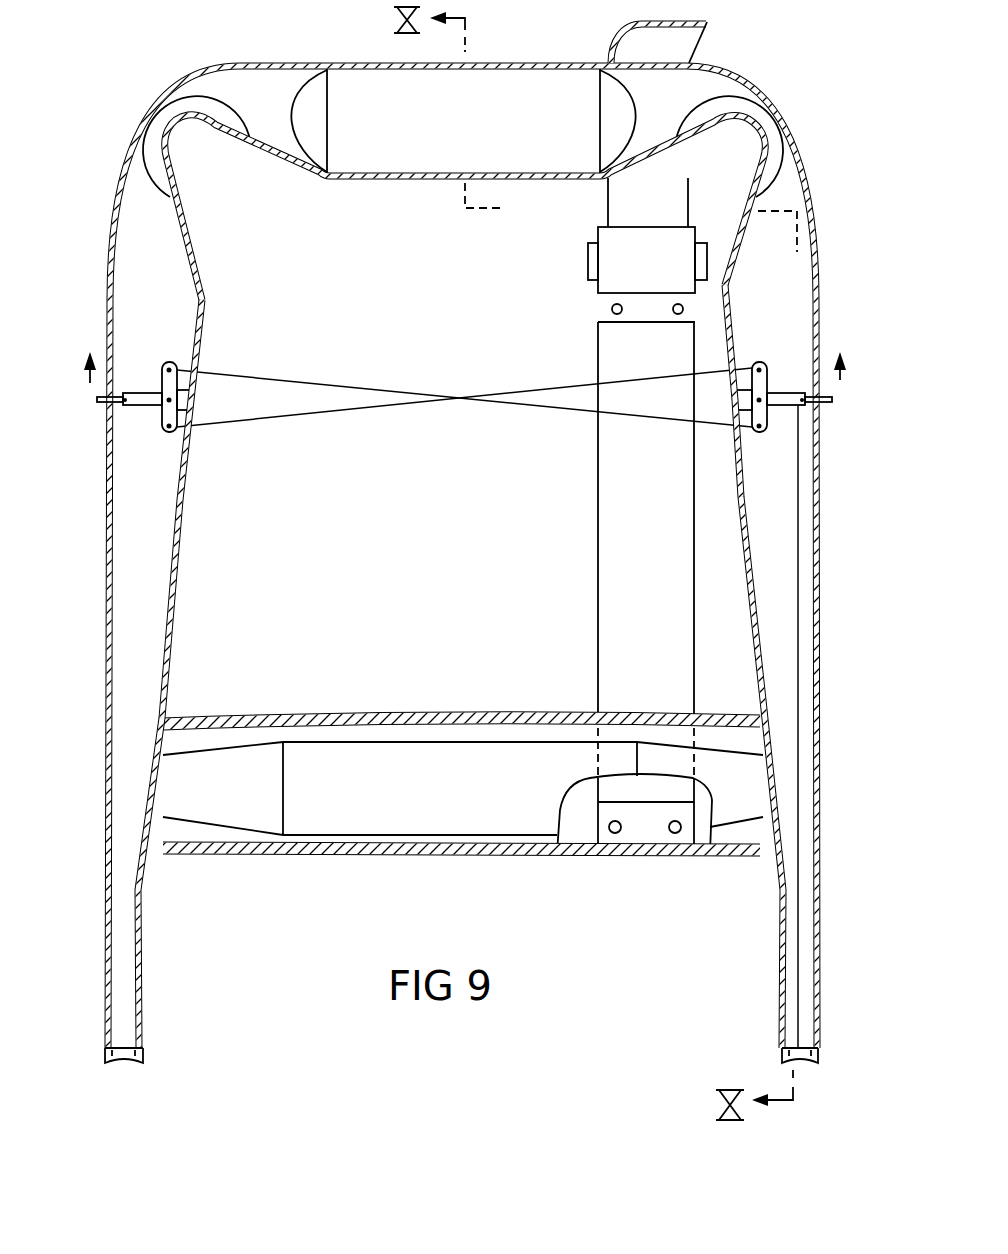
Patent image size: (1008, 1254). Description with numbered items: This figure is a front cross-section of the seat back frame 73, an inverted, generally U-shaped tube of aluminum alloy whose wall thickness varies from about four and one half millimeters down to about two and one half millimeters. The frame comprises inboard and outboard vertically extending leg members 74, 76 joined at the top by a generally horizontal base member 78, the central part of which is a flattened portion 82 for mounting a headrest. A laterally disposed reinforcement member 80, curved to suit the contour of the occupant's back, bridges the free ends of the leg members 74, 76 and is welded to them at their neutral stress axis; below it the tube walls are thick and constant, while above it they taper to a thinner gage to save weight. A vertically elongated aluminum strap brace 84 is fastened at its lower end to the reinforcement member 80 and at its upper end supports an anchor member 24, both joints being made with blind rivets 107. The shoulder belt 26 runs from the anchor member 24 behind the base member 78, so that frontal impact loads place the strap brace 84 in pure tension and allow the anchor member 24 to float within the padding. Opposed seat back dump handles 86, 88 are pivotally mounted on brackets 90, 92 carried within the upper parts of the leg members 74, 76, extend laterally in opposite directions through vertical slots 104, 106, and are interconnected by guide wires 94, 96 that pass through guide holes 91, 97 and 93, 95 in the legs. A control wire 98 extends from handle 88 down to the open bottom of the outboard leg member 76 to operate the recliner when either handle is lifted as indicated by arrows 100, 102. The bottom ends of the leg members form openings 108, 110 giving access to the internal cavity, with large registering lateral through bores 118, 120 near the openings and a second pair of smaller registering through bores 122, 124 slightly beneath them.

The anchor member 24 is at (618, 243).
The shoulder belt 26 is at (677, 38).
The seat back frame 73 is at (111, 124).
The inboard leg member 74 is at (110, 572).
The outboard leg member 76 is at (818, 540).
The base member 78 is at (262, 88).
The reinforcement member 80 is at (418, 716).
The flattened portion 82 is at (400, 150).
The strap brace 84 is at (614, 578).
The seat back dump handle 86 is at (142, 404).
The seat back dump handle 88 is at (790, 393).
The bracket 90 is at (185, 400).
The guide hole 91 is at (198, 368).
The bracket 92 is at (735, 400).
The guide hole 93 is at (193, 425).
The guide wire 94 is at (350, 387).
The guide hole 95 is at (735, 368).
The guide wire 96 is at (345, 412).
The guide hole 97 is at (735, 428).
The control wire 98 is at (797, 627).
The arrow 100 is at (90, 400).
The arrow 102 is at (840, 380).
The vertical slot 104 is at (105, 408).
The vertical slot 106 is at (818, 370).
The blind rivets 107 is at (673, 309).
The opening 108 is at (122, 1066).
The opening 110 is at (783, 1074).
The lateral through bore 118 is at (137, 967).
The lateral through bore 120 is at (813, 967).
The through bore 122 is at (135, 1037).
The through bore 124 is at (813, 1045).